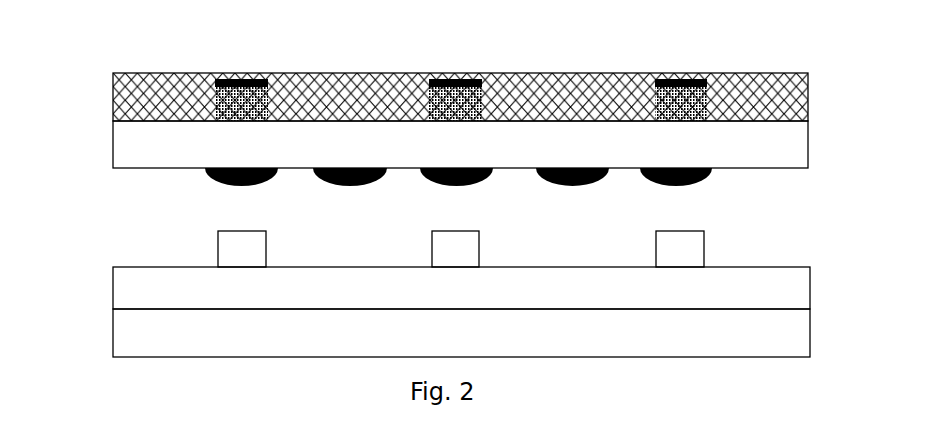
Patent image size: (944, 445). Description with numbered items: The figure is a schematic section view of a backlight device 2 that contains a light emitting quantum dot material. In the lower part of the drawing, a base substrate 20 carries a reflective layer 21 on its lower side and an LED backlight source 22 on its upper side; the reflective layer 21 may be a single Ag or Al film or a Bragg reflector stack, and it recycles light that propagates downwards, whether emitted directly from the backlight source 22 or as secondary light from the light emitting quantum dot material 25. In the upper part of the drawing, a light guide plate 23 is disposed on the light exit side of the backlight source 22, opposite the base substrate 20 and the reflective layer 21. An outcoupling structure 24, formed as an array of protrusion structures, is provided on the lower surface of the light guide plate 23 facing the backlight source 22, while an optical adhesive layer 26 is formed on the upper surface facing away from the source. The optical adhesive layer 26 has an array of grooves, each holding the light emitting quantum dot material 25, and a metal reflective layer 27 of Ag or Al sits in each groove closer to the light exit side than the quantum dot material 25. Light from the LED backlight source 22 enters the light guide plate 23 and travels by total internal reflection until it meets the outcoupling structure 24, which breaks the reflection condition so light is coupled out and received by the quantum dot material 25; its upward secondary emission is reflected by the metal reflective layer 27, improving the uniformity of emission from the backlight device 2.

The backlight device 2 is at (450, 197).
The base substrate 20 is at (775, 282).
The reflective layer 21 is at (780, 329).
The LED backlight source 22 is at (687, 251).
The light guide plate 23 is at (783, 138).
The outcoupling structure 24 is at (215, 185).
The light emitting quantum dot material 25 is at (240, 103).
The optical adhesive layer 26 is at (778, 92).
The metal reflective layer 27 is at (215, 79).